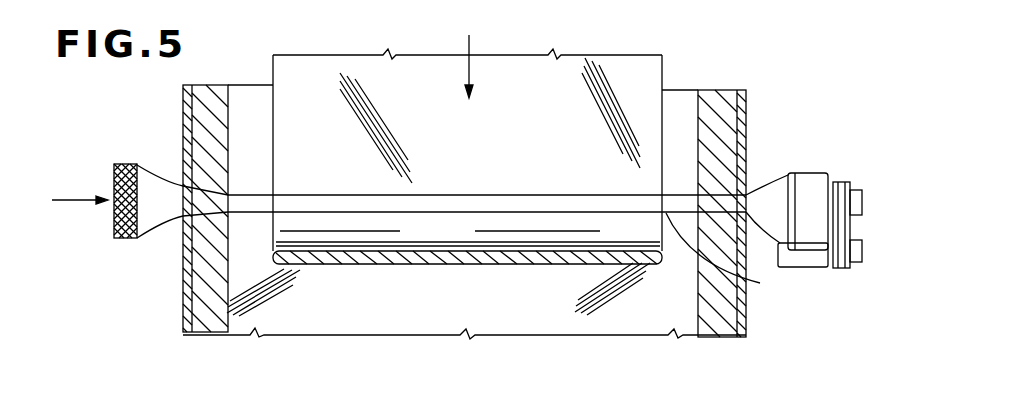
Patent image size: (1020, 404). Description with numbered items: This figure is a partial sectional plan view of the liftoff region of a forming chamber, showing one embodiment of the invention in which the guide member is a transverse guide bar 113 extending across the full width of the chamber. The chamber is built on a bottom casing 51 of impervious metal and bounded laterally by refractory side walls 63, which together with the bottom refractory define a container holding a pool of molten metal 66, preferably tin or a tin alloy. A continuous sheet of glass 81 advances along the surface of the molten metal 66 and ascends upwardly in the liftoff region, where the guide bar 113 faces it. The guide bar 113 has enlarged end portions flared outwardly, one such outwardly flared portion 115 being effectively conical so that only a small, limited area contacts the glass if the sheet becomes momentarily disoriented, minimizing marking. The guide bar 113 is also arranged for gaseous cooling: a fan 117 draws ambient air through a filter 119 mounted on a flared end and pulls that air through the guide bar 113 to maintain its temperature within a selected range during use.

The bottom casing 51 is at (742, 96).
The refractory side walls 63 is at (207, 94).
The pool of molten metal 66 is at (462, 302).
The continuous sheet of glass 81 is at (474, 164).
The guide bar 113 is at (527, 204).
The outwardly flared portion 115 is at (740, 281).
The fan 117 is at (812, 172).
The filter 119 is at (122, 241).